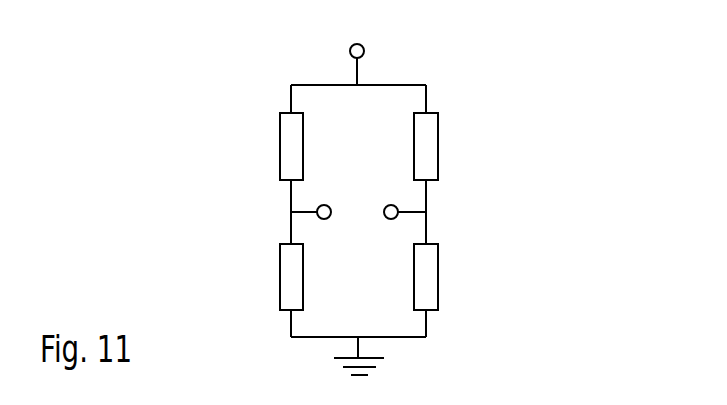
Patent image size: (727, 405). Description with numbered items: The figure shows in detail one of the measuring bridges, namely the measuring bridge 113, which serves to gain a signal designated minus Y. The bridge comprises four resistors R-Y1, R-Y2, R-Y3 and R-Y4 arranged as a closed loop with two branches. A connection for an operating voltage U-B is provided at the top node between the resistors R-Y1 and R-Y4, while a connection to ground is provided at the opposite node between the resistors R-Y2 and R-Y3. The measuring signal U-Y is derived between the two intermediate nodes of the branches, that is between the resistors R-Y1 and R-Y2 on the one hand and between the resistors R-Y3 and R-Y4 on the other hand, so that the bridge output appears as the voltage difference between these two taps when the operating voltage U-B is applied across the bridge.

The measuring bridge 113 is at (403, 190).
The resistor R-Y1 is at (280, 143).
The resistor R-Y2 is at (280, 275).
The resistor R-Y3 is at (438, 275).
The resistor R-Y4 is at (438, 143).
The operating voltage U-B is at (361, 32).
The measuring signal U-Y is at (358, 196).